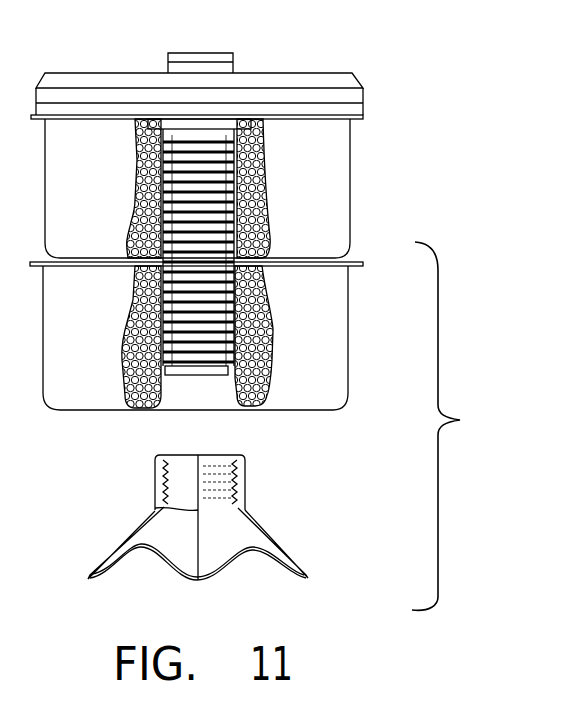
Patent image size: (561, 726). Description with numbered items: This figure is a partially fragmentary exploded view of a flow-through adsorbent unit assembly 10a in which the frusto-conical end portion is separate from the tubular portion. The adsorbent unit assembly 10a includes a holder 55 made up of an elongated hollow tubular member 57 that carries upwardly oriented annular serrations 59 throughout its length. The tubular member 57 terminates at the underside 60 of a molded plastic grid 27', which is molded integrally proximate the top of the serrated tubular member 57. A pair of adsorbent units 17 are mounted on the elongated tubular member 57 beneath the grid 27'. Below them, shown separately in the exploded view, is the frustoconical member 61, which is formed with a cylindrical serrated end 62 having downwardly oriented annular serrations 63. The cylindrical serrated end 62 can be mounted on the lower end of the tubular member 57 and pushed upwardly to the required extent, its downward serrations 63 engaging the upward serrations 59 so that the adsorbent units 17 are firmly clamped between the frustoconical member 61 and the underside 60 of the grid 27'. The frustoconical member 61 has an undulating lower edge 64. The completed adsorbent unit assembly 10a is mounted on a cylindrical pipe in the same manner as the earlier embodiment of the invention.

The adsorbent unit assembly 10a is at (260, 229).
The molded plastic grid 27' is at (216, 73).
The holder 55 is at (233, 68).
The adsorbent unit 17 is at (350, 190).
The elongated tubular member 57 is at (203, 376).
The annular serrations 59 is at (180, 376).
The underside of molded plastic grid 60 is at (275, 120).
The frustoconical member 61 is at (280, 548).
The cylindrical serrated end 62 is at (247, 495).
The annular serrations 63 is at (233, 500).
The undulating lower edge 64 is at (118, 566).